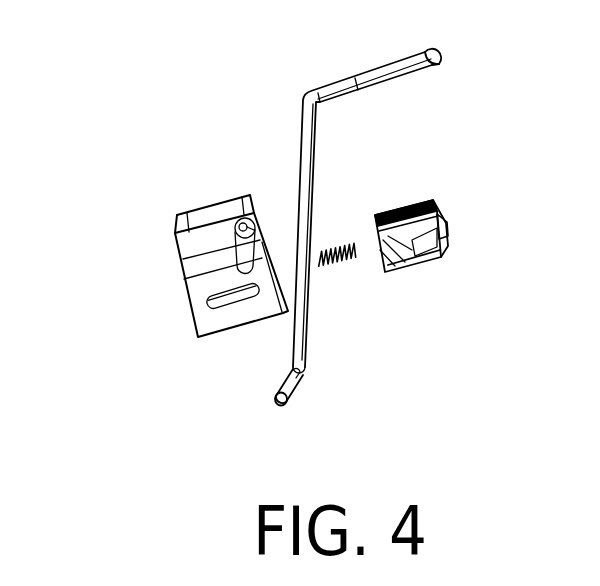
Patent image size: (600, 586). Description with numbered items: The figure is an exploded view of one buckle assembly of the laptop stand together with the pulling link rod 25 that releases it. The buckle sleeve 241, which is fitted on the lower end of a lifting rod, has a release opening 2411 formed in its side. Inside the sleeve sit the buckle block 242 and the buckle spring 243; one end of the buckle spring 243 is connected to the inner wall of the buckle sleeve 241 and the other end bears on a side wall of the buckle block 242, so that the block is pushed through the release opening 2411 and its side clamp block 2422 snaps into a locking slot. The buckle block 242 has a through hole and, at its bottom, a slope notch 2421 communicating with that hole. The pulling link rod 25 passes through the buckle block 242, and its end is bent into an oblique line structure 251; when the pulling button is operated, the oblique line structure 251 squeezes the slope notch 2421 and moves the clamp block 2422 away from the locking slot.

The pulling link rod 25 is at (313, 225).
The oblique line structure 251 is at (290, 388).
The buckle sleeve 241 is at (210, 271).
The release opening 2411 is at (230, 315).
The buckle block 242 is at (418, 200).
The slope notch 2421 is at (418, 262).
The clamp block 2422 is at (448, 230).
The buckle spring 243 is at (350, 260).